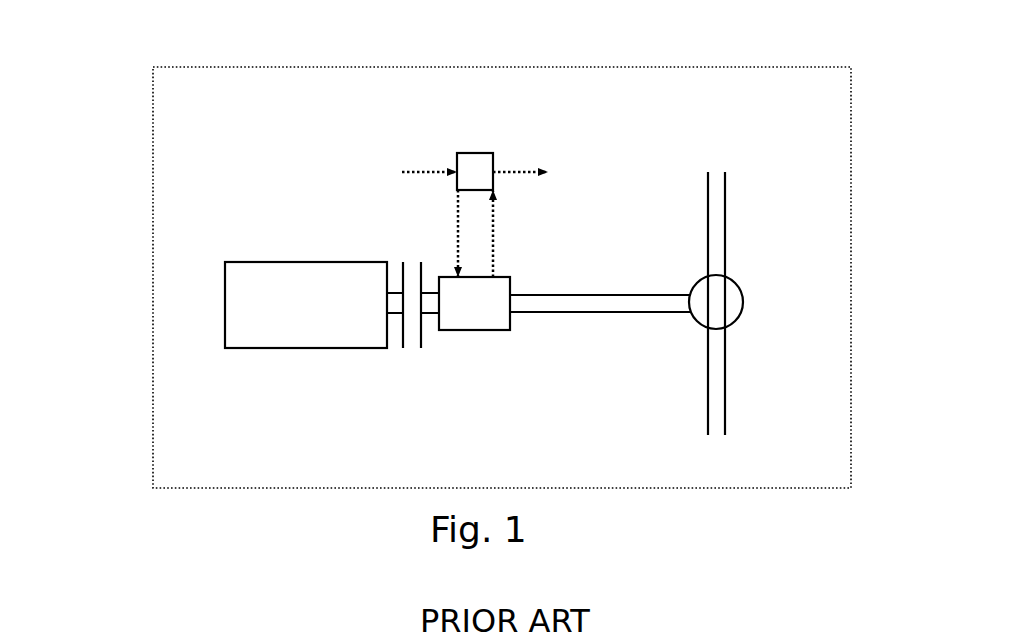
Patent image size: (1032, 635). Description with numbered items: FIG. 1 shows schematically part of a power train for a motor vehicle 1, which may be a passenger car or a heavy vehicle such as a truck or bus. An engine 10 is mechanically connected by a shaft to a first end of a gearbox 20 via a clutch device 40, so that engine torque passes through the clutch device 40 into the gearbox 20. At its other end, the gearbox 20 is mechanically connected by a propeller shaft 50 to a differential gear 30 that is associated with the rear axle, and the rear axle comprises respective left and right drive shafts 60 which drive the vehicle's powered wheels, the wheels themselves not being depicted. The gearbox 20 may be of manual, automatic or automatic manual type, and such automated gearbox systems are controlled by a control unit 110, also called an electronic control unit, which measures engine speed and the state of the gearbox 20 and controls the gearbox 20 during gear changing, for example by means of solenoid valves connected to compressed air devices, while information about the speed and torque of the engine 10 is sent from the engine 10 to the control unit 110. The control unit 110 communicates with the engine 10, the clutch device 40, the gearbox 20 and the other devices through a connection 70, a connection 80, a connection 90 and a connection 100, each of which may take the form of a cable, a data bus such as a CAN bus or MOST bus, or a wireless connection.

The motor vehicle 1 is at (172, 139).
The engine 10 is at (280, 313).
The gearbox 20 is at (475, 312).
The differential gear 30 is at (725, 293).
The clutch device 40 is at (410, 328).
The propeller shaft 50 is at (583, 312).
The drive shafts 60 is at (727, 222).
The connection 70 is at (453, 225).
The connection 80 is at (495, 225).
The connection 90 is at (423, 173).
The connection 100 is at (512, 173).
The control unit 110 is at (475, 153).